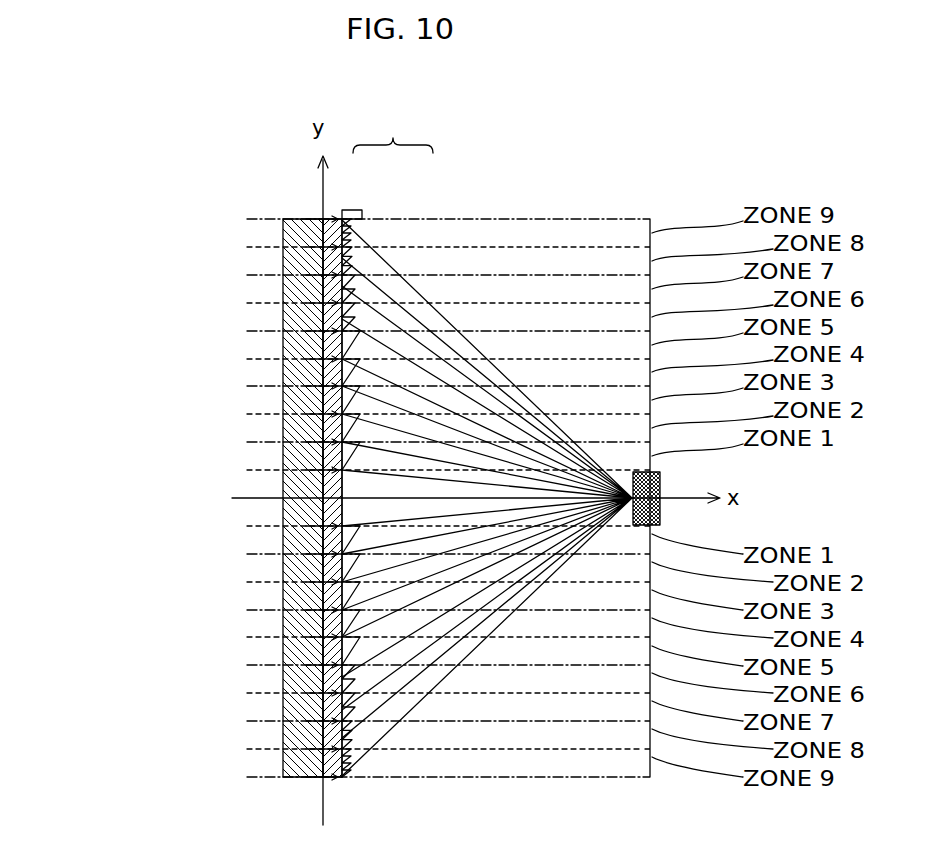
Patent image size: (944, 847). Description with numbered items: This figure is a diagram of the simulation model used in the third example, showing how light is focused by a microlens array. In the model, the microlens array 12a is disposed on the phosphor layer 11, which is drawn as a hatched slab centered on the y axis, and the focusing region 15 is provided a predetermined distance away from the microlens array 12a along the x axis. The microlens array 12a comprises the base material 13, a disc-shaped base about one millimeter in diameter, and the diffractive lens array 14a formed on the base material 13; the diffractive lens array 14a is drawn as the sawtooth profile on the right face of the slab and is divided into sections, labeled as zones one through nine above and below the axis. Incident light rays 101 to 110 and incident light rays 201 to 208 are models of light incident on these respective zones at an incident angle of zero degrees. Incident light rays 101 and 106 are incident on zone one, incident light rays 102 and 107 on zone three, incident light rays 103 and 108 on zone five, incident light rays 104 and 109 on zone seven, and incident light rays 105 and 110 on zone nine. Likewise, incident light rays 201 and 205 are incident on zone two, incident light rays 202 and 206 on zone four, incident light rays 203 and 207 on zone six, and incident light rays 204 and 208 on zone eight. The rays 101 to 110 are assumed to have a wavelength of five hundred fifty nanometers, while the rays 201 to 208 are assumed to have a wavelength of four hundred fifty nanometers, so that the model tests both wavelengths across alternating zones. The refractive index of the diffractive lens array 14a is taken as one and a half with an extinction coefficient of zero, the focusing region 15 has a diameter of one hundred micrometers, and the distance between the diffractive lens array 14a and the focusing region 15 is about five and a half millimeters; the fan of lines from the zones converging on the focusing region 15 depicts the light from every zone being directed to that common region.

The phosphor layer 11 is at (311, 232).
The microlens array 12a is at (393, 134).
The base material 13 is at (331, 222).
The diffractive lens array 14a is at (358, 208).
The focusing region 15 is at (661, 479).
The incident light ray 101 is at (312, 442).
The incident light ray 102 is at (312, 386).
The incident light ray 103 is at (312, 331).
The incident light ray 104 is at (312, 275).
The incident light ray 105 is at (312, 219).
The incident light ray 106 is at (312, 556).
The incident light ray 107 is at (312, 612).
The incident light ray 108 is at (312, 667).
The incident light ray 109 is at (312, 723).
The incident light ray 110 is at (312, 779).
The incident light ray 201 is at (318, 414).
The incident light ray 202 is at (318, 359).
The incident light ray 203 is at (318, 303).
The incident light ray 204 is at (318, 247).
The incident light ray 205 is at (318, 584).
The incident light ray 206 is at (318, 639).
The incident light ray 207 is at (318, 695).
The incident light ray 208 is at (318, 751).